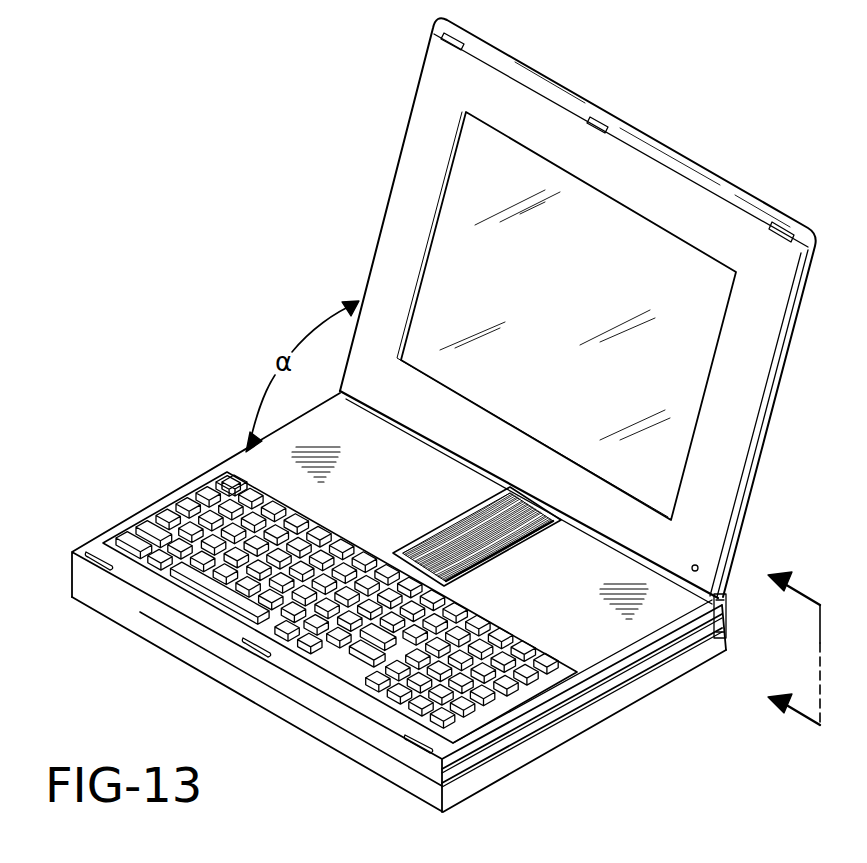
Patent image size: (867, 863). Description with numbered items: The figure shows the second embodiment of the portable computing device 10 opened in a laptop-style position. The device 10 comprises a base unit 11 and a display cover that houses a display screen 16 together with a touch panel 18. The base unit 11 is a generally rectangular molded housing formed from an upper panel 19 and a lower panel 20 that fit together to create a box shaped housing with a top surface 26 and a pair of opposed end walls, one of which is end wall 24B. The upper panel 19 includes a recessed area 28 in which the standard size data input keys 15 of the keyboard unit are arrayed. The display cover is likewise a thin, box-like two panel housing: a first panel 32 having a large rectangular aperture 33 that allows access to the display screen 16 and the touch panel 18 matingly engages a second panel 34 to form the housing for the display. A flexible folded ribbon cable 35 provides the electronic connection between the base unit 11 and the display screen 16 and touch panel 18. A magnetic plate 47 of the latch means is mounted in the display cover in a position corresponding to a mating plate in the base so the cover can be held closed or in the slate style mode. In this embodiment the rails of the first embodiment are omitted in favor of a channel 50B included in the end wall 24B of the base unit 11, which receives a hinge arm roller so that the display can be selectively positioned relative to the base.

The portable computing device 10 is at (742, 160).
The base unit 11 is at (500, 780).
The data input keys 15 is at (255, 597).
The display screen 16 is at (693, 350).
The touch panel 18 is at (561, 290).
The upper panel 19 is at (383, 745).
The lower panel 20 is at (417, 787).
The end wall 24B is at (538, 722).
The top surface 26 is at (564, 621).
The recessed area 28 is at (258, 498).
The first panel 32 is at (792, 287).
The rectangular aperture 33 is at (451, 189).
The second panel 34 is at (800, 281).
The flexible folded ribbon cable 35 is at (451, 548).
The magnetic plates 47 is at (456, 40).
The channel 50B is at (510, 752).